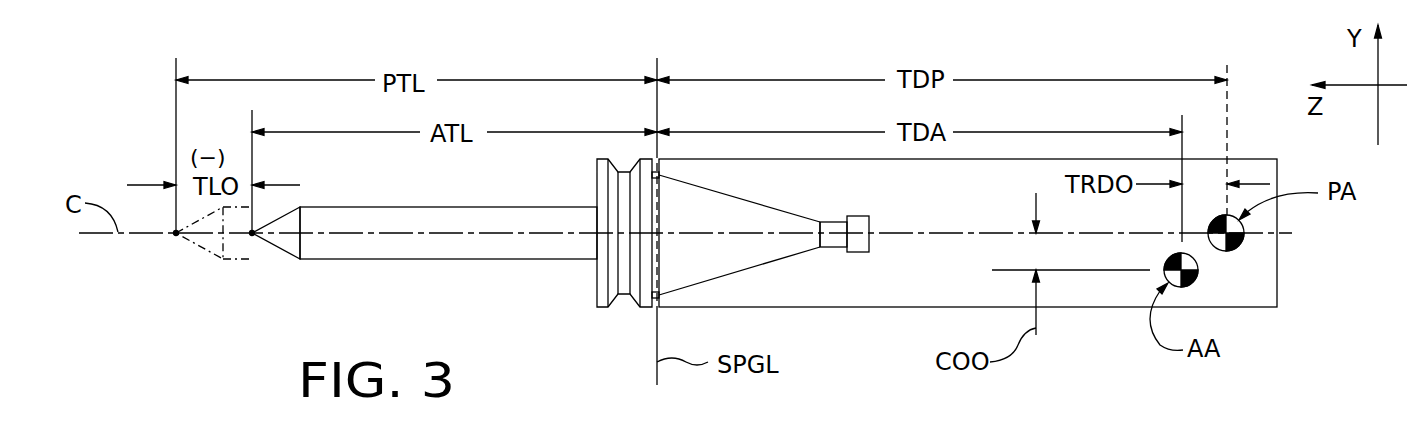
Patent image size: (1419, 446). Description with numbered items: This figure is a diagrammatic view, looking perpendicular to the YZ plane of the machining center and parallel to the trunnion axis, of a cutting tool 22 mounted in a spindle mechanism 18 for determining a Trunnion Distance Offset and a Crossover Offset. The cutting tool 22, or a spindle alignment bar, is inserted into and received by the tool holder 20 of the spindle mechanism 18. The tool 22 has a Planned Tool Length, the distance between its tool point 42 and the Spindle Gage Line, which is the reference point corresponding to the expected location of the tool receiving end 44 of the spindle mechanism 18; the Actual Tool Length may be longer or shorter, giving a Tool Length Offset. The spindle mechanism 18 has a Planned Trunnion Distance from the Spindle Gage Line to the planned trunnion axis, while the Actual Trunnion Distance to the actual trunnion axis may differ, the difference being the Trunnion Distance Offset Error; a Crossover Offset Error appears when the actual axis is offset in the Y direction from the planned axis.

The tool point 42 is at (176, 236).
The cutting tool 22 is at (460, 260).
The tool receiving end 44 is at (642, 308).
The tool holder 20 is at (762, 290).
The spindle mechanism 18 is at (957, 284).